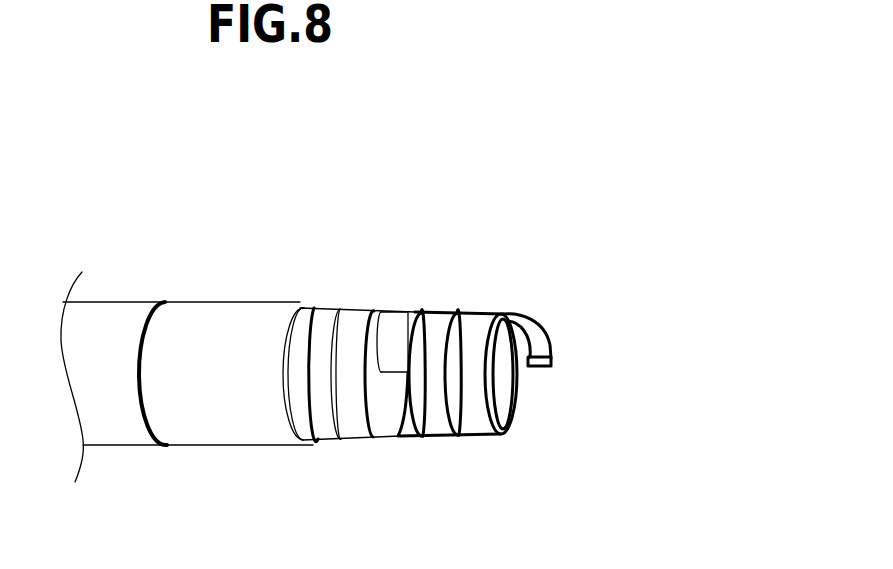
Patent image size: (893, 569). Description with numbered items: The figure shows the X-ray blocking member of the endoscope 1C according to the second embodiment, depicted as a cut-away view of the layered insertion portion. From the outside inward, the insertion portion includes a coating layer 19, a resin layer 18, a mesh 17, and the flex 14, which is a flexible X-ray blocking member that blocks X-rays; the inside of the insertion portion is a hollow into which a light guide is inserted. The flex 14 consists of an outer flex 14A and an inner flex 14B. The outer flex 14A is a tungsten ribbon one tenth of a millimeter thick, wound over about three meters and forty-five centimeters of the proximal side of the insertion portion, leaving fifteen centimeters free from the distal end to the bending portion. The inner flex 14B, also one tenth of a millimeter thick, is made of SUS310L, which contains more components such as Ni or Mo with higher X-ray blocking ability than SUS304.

The endoscope 1C is at (527, 185).
The flex 14 is at (488, 242).
The outer flex 14A is at (403, 311).
The inner flex 14B is at (460, 314).
The mesh 17 is at (313, 307).
The resin layer 18 is at (225, 302).
The coating layer 19 is at (105, 301).